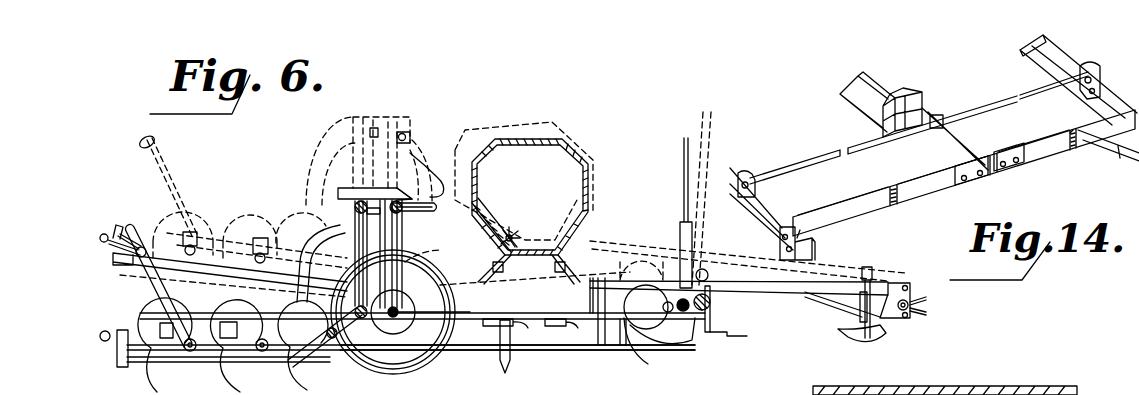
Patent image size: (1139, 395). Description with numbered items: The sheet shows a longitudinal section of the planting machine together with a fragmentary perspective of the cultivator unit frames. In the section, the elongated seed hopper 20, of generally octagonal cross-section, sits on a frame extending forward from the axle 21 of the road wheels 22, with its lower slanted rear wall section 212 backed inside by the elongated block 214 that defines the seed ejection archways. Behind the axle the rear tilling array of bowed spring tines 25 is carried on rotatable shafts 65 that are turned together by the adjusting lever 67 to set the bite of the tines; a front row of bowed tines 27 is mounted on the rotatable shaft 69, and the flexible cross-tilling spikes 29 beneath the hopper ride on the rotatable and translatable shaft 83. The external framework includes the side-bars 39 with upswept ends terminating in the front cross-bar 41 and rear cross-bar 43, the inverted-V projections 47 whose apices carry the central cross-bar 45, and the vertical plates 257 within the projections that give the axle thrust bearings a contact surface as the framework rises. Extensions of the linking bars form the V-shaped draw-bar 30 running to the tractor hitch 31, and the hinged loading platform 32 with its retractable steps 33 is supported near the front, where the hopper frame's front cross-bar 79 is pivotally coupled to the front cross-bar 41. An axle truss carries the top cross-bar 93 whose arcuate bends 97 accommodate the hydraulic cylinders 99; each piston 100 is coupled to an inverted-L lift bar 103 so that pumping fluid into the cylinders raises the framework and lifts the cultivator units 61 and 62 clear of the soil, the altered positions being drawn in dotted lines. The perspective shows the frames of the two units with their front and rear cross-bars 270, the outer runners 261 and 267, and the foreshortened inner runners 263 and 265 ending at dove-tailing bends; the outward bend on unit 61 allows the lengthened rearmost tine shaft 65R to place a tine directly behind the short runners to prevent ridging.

In FIG. 6, the seed hopper 20 is at (604, 156).
In FIG. 6, the axle 21 is at (393, 313).
In FIG. 6, the road wheels 22 is at (372, 358).
In FIG. 6, the earth-tilling elements 25 is at (291, 222).
In FIG. 6, the tilling elements 27 is at (640, 363).
In FIG. 6, the cross-tilling elements 29 is at (561, 326).
In FIG. 6, the draw-bar 30 is at (784, 289).
In FIG. 6, the tractor hitch 31 is at (892, 285).
In FIG. 6, the loading platform 32 is at (613, 247).
In FIG. 6, the retractable steps 33 is at (740, 336).
In FIG. 6, the side-bars 39 is at (473, 350).
In FIG. 6, the front cross-bar 41 is at (711, 304).
In FIG. 6, the rear cross-bar 43 is at (103, 337).
In FIG. 6, the central cross-bar 45 is at (380, 130).
In FIG. 6, the vertical projections 47 is at (422, 248).
In FIG. 6, the rotatable shafts 65 is at (190, 352).
In FIG. 6, the adjusting lever 67 is at (172, 163).
In FIG. 6, the rotatable shaft 69 is at (634, 314).
In FIG. 6, the front cross-bar 79 is at (707, 333).
In FIG. 6, the shaft 83 is at (515, 323).
In FIG. 6, the top cross-bar 93 is at (409, 188).
In FIG. 6, the arcuate bends 97 is at (430, 175).
In FIG. 6, the hydraulic cylinders 99 is at (403, 219).
In FIG. 6, the piston 100 is at (393, 182).
In FIG. 6, the lift bar 103 is at (350, 124).
In FIG. 6, the lower slanted section 212 is at (482, 221).
In FIG. 6, the elongated block 214 is at (477, 213).
In FIG. 6, the vertical plates 257 is at (402, 342).
In FIG. 14, the cultivator unit 61 is at (877, 180).
In FIG. 14, the cultivator unit 62 is at (1044, 126).
In FIG. 14, the rearmost tine-supporting shaft 65R is at (812, 163).
In FIG. 14, the runner 261 is at (730, 168).
In FIG. 14, the inner runner 263 is at (860, 108).
In FIG. 14, the inner runner 265 is at (882, 87).
In FIG. 14, the runner 267 is at (1045, 63).
In FIG. 14, the cross-bars 270 is at (873, 210).